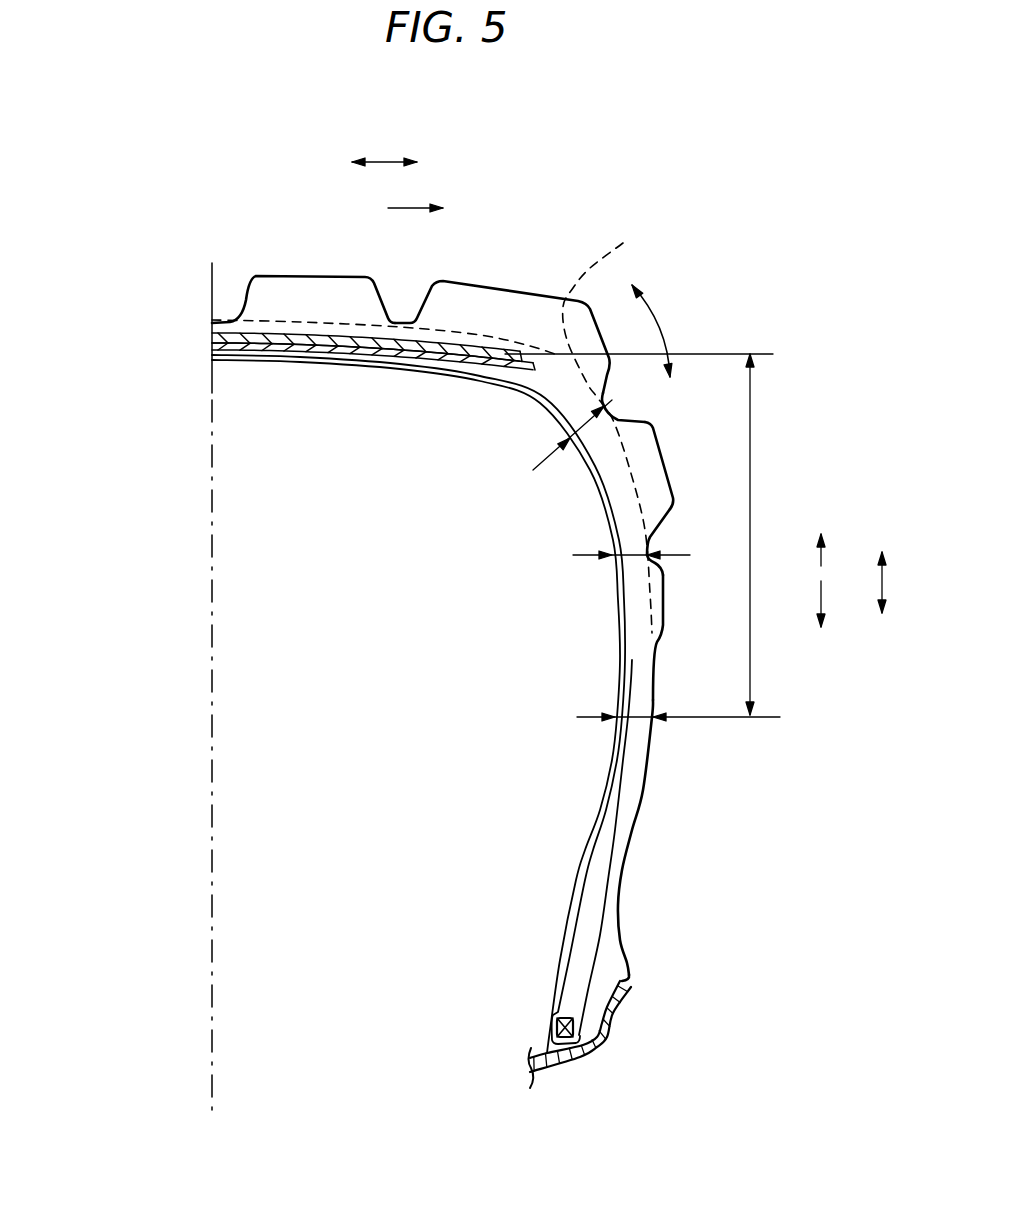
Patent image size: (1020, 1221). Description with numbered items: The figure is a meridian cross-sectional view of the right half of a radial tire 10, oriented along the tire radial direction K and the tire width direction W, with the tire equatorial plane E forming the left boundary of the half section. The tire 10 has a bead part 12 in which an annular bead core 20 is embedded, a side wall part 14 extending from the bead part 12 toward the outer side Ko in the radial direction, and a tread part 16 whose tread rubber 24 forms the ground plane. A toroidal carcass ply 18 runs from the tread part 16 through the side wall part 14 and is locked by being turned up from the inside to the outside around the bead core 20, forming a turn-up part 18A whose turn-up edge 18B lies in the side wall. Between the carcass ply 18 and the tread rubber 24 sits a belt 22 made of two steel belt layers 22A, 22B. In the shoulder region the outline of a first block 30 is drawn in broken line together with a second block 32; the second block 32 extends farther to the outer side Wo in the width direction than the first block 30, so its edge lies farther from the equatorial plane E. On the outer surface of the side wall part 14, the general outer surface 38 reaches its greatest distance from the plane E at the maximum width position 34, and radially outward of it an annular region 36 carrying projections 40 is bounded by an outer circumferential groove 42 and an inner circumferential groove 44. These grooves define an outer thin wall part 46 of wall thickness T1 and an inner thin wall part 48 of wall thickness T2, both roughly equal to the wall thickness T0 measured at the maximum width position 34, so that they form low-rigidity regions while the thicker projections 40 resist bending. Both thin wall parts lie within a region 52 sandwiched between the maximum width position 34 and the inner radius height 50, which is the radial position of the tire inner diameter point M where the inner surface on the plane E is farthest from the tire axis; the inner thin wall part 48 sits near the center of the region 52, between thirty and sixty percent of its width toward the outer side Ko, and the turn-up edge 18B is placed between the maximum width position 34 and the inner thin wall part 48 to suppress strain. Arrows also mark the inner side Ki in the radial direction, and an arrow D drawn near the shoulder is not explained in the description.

The radial tire 10 is at (266, 178).
The bead part 12 is at (643, 973).
The side wall part 14 is at (710, 677).
The tread part 16 is at (472, 257).
The carcass ply 18 is at (558, 423).
The turn-up part 18A is at (603, 932).
The turn-up edge 18B is at (630, 665).
The bead core 20 is at (572, 1057).
The belt 22 is at (92, 308).
The steel belt layer 22A is at (212, 335).
The steel belt layer 22B is at (212, 342).
The tread rubber 24 is at (347, 298).
The first block 30 is at (432, 422).
The second block 32 is at (510, 307).
The maximum width position 34 is at (656, 720).
The annular region 36 is at (683, 468).
The general outer surface 38 is at (653, 662).
The projection 40 is at (657, 443).
The outer circumferential groove 42 is at (604, 398).
The inner circumferential groove 44 is at (652, 542).
The outer thin wall part 46 is at (622, 407).
The inner thin wall part 48 is at (667, 558).
The inner radius height 50 is at (719, 354).
The region 52 is at (751, 524).
The tire equatorial plane E is at (212, 270).
The tire inner diameter point M is at (212, 357).
The tire width direction W is at (384, 146).
The outer side in tire width direction Wo is at (415, 194).
The tread surface direction D is at (663, 330).
The tire radial direction K is at (892, 582).
The outer side in tire radial direction Ko is at (840, 553).
The inner side in tire radial direction Ki is at (836, 604).
The wall thickness in the maximum width position T0 is at (628, 722).
The wall thickness of the outer thin wall part T1 is at (573, 457).
The wall thickness of the inner thin wall part T2 is at (618, 577).